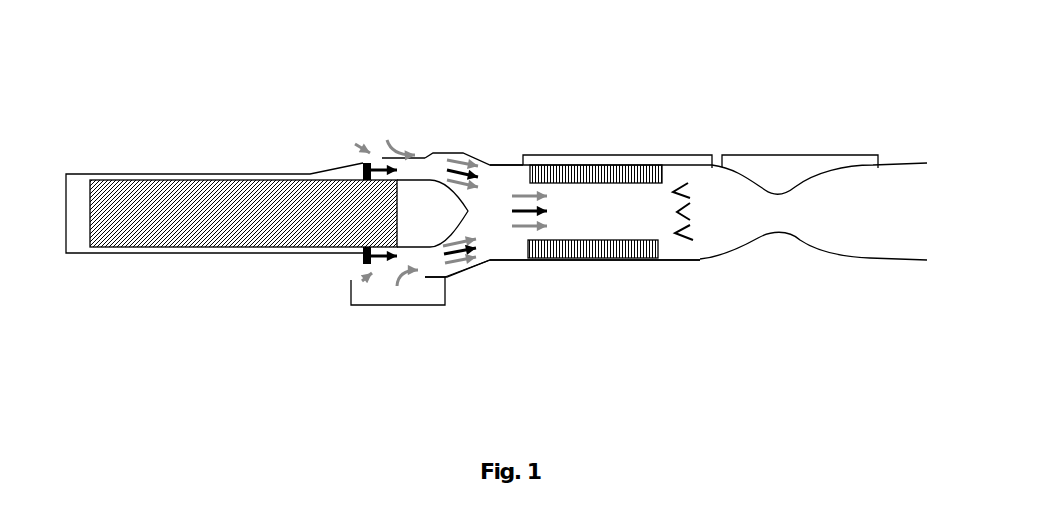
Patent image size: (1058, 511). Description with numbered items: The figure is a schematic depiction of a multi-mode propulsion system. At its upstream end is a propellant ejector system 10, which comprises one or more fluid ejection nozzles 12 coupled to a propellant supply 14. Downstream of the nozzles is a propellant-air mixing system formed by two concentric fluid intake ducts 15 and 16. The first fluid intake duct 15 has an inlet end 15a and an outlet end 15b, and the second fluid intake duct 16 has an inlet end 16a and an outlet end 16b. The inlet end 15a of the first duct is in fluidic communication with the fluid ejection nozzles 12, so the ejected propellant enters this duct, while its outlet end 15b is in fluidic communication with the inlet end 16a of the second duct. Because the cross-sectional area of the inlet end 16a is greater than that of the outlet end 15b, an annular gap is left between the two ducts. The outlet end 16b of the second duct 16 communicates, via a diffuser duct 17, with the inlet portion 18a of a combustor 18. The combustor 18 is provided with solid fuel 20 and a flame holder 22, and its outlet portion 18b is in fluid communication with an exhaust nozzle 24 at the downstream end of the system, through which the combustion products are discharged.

The propellant ejector system 10 is at (415, 305).
The fluid ejection nozzles 12 is at (362, 262).
The propellant supply 14 is at (105, 185).
The fluid intake duct 15 is at (397, 160).
The inlet end 15a is at (382, 159).
The outlet end 15b is at (425, 159).
The fluid intake duct 16 is at (433, 277).
The inlet end 16a is at (427, 277).
The outlet end 16b is at (443, 277).
The diffuser duct 17 is at (460, 157).
The combustor 18 is at (627, 155).
The inlet portion 18a is at (508, 162).
The outlet portion 18b is at (705, 262).
The solid fuel 20 is at (593, 258).
The flame holder 22 is at (687, 217).
The exhaust nozzle 24 is at (788, 155).